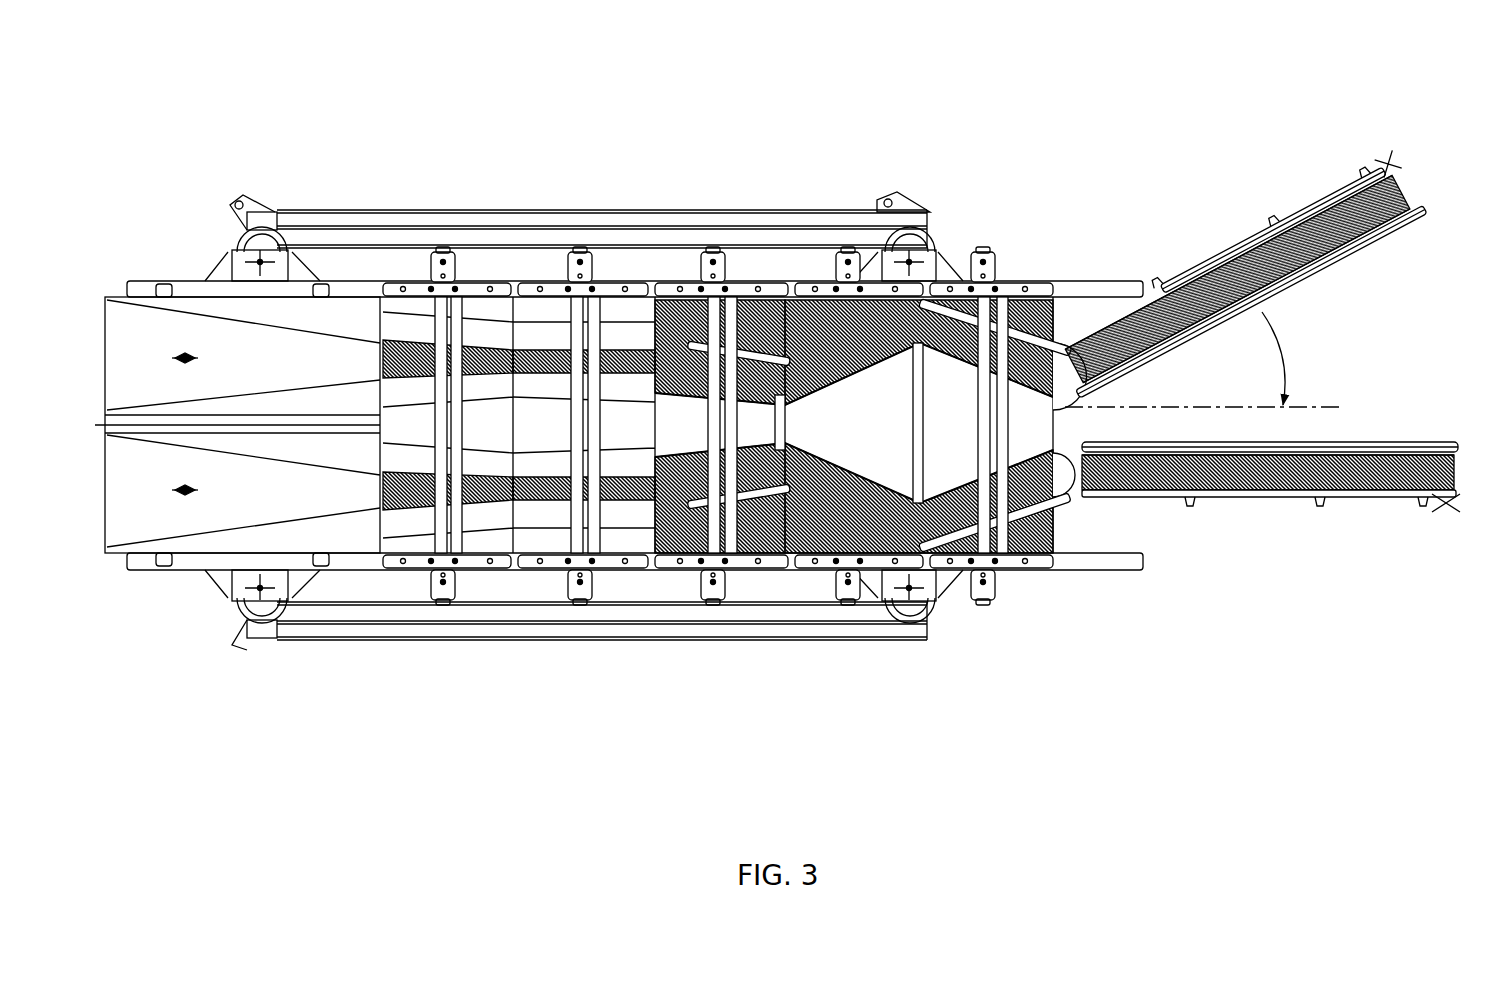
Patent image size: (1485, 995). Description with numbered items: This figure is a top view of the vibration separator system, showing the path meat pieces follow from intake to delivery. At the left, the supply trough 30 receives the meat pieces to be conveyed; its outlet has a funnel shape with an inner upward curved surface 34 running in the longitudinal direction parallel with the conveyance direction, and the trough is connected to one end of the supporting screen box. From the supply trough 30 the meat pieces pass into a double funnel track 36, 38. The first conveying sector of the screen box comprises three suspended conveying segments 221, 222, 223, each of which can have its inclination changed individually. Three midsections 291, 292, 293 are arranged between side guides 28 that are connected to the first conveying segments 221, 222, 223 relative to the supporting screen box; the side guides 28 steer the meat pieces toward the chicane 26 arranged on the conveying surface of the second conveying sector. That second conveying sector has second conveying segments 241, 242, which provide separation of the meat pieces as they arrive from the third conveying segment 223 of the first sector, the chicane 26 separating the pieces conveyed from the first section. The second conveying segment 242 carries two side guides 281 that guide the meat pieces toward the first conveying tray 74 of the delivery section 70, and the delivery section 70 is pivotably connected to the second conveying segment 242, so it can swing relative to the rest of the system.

The supply trough 30 is at (185, 592).
The inner upward curved surface 34 is at (343, 455).
The double funnel track 36 is at (345, 365).
The double funnel track 38 is at (302, 490).
The first conveying segment 221 is at (478, 280).
The second conveying segment 222 is at (603, 280).
The third conveying segment 223 is at (686, 280).
The second conveying segment 241 is at (826, 280).
The second conveying segment 242 is at (963, 280).
The midsection 291 is at (407, 438).
The midsection 292 is at (543, 440).
The midsection 293 is at (670, 437).
The side guides 28 is at (480, 540).
The chicane 26 is at (840, 435).
The side guides 281 is at (1043, 510).
The delivery section 70 is at (1230, 188).
The first conveying tray 74 is at (1277, 500).